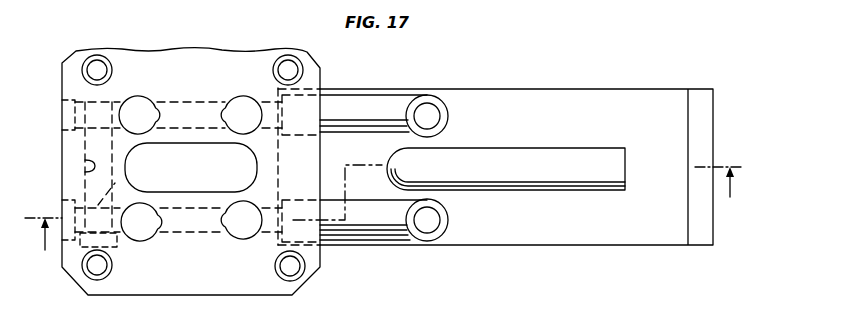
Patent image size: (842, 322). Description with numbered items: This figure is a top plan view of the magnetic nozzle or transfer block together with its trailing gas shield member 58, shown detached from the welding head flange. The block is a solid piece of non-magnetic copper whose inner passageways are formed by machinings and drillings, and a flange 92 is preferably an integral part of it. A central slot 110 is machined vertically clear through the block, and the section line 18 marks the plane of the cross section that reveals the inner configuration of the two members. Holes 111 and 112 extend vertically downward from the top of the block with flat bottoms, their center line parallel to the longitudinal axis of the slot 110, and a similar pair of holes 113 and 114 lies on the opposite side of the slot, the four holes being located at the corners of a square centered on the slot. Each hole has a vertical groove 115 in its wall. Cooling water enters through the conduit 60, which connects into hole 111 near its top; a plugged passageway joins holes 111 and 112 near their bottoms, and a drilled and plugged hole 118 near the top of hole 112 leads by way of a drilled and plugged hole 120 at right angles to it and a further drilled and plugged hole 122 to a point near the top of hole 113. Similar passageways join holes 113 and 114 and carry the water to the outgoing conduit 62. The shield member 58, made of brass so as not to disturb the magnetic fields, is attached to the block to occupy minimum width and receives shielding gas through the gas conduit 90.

The section line 18- 18 is at (384, 224).
The trailing gas shield member 58 is at (524, 86).
The conduit for incoming coolant 60 is at (390, 228).
The conduit for outgoing coolant 62 is at (382, 103).
The gas conduit 90 is at (535, 158).
The flange 92 is at (284, 294).
The central slot 110 is at (262, 158).
The hole 111 is at (246, 238).
The hole 112 is at (140, 240).
The hole 113 is at (148, 100).
The hole 114 is at (248, 98).
The vertical groove 115 is at (177, 218).
The drilled and plugged hole 118 is at (142, 168).
The drilled and plugged hole 120 is at (90, 170).
The drilled and plugged hole 122 is at (90, 110).